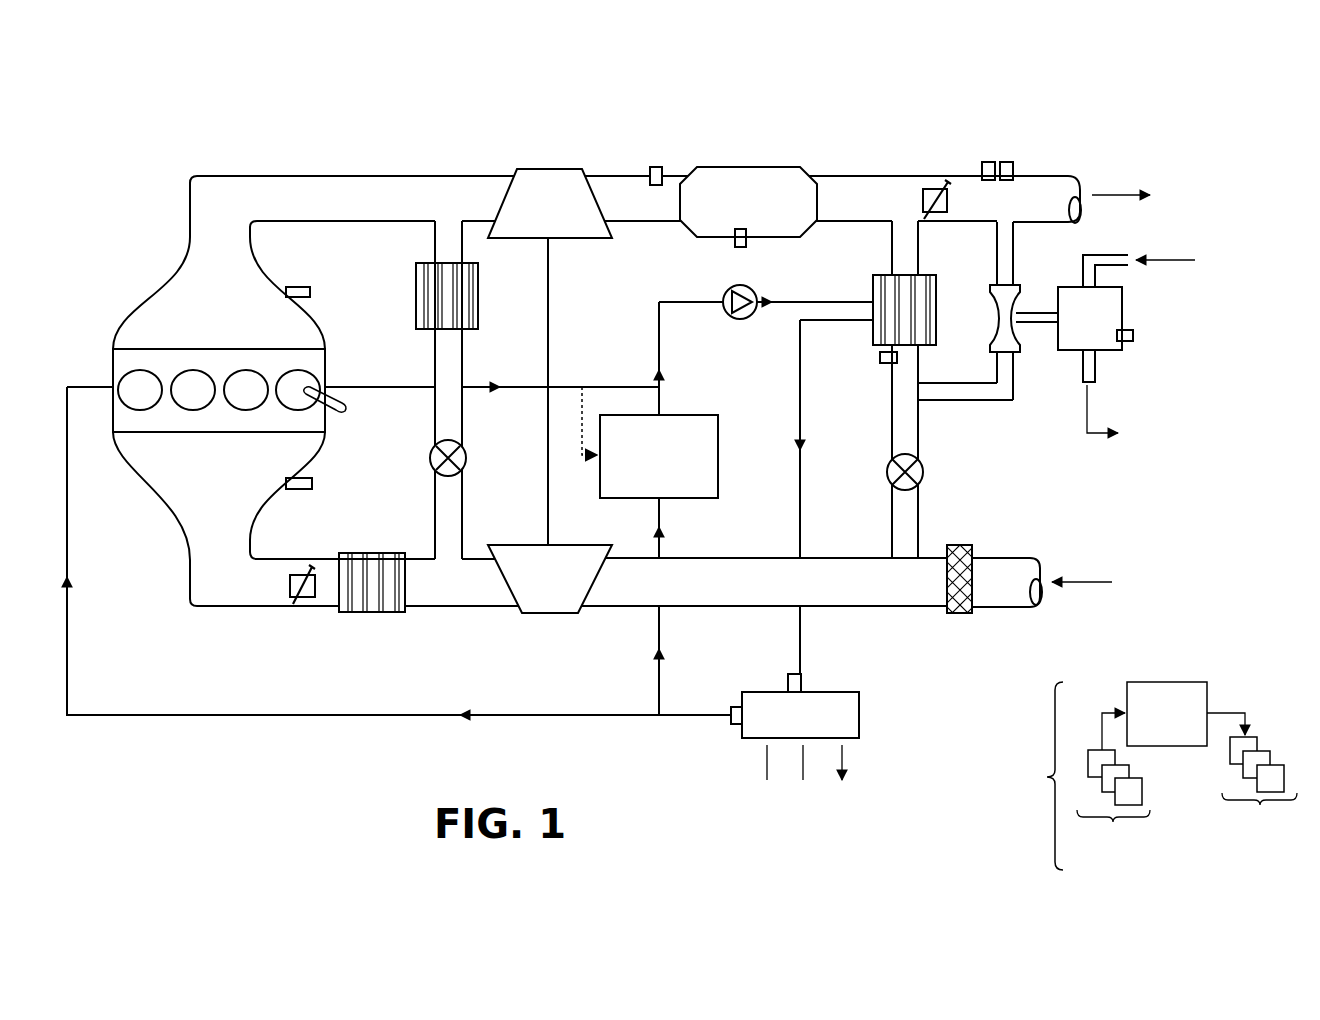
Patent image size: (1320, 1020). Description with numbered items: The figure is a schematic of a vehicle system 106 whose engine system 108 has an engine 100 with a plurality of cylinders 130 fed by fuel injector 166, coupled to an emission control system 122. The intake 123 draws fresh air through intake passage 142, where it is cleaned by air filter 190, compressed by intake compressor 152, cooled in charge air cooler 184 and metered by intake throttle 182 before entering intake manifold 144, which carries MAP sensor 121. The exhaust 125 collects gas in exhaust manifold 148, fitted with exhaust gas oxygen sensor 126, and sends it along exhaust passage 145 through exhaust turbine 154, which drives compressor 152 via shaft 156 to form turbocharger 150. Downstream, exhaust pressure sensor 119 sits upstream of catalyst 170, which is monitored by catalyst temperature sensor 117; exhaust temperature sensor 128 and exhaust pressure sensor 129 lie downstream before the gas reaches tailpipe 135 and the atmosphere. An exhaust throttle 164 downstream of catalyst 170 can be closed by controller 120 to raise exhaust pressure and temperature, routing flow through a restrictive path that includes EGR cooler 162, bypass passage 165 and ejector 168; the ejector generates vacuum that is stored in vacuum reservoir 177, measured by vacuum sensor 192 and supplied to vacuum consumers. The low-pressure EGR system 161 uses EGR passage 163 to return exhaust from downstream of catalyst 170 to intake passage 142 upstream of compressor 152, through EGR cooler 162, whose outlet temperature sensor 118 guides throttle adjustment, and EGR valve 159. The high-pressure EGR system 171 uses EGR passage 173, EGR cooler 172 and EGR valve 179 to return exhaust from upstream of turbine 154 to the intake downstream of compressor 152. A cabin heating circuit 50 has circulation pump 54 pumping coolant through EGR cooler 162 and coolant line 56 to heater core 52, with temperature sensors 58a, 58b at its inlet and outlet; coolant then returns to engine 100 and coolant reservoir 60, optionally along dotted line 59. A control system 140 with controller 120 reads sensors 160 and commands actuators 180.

The engine 100 is at (200, 349).
The vehicle system 106 is at (1192, 101).
The engine system 108 is at (148, 170).
The exhaust catalyst temperature sensor 117 is at (740, 247).
The temperature sensor 118 is at (880, 358).
The exhaust pressure sensor 119 is at (657, 167).
The controller 120 is at (1167, 714).
The MAP sensor 121 is at (292, 489).
The emission control system 122 is at (726, 137).
The intake 123 is at (226, 659).
The exhaust 125 is at (252, 140).
The exhaust gas oxygen sensor 126 is at (288, 287).
The exhaust temperature sensor 128 is at (988, 162).
The exhaust pressure sensor 129 is at (1007, 162).
The cylinders 130 is at (133, 374).
The tailpipe 135 is at (1068, 176).
The control system 140 is at (1137, 776).
The intake passage 142 is at (1000, 558).
The intake manifold 144 is at (274, 519).
The exhaust passage 145 is at (280, 176).
The exhaust manifold 148 is at (313, 262).
The turbocharger 150 is at (553, 368).
The intake compressor 152 is at (560, 615).
The exhaust turbine 154 is at (555, 169).
The shaft 156 is at (548, 313).
The EGR valve 159 is at (923, 469).
The sensors 160 is at (1114, 789).
The low-pressure EGR system 161 is at (857, 284).
The EGR cooler 162 is at (937, 283).
The EGR passage 163 is at (918, 447).
The exhaust throttle 164 is at (925, 203).
The bypass passage 165 is at (930, 383).
The fuel injector 166 is at (340, 405).
The ejector 168 is at (1020, 296).
The catalyst 170 is at (748, 202).
The high-pressure EGR system 171 is at (400, 346).
The EGR cooler 172 is at (416, 291).
The EGR passage 173 is at (435, 412).
The vacuum reservoir 177 is at (1182, 348).
The EGR valve 179 is at (463, 452).
The actuators 180 is at (1256, 781).
The intake throttle 182 is at (290, 587).
The charge air cooler 184 is at (360, 553).
The air filter 190 is at (960, 545).
The vacuum sensor 192 is at (1133, 337).
The cabin heating circuit 50 is at (841, 651).
The heater core 52 is at (800, 754).
The circulation pump 54 is at (742, 320).
The coolant line 56 is at (798, 611).
The temperature sensor 58a is at (788, 683).
The temperature sensor 58b is at (731, 713).
The dotted line 59 is at (583, 391).
The coolant reservoir 60 is at (659, 508).